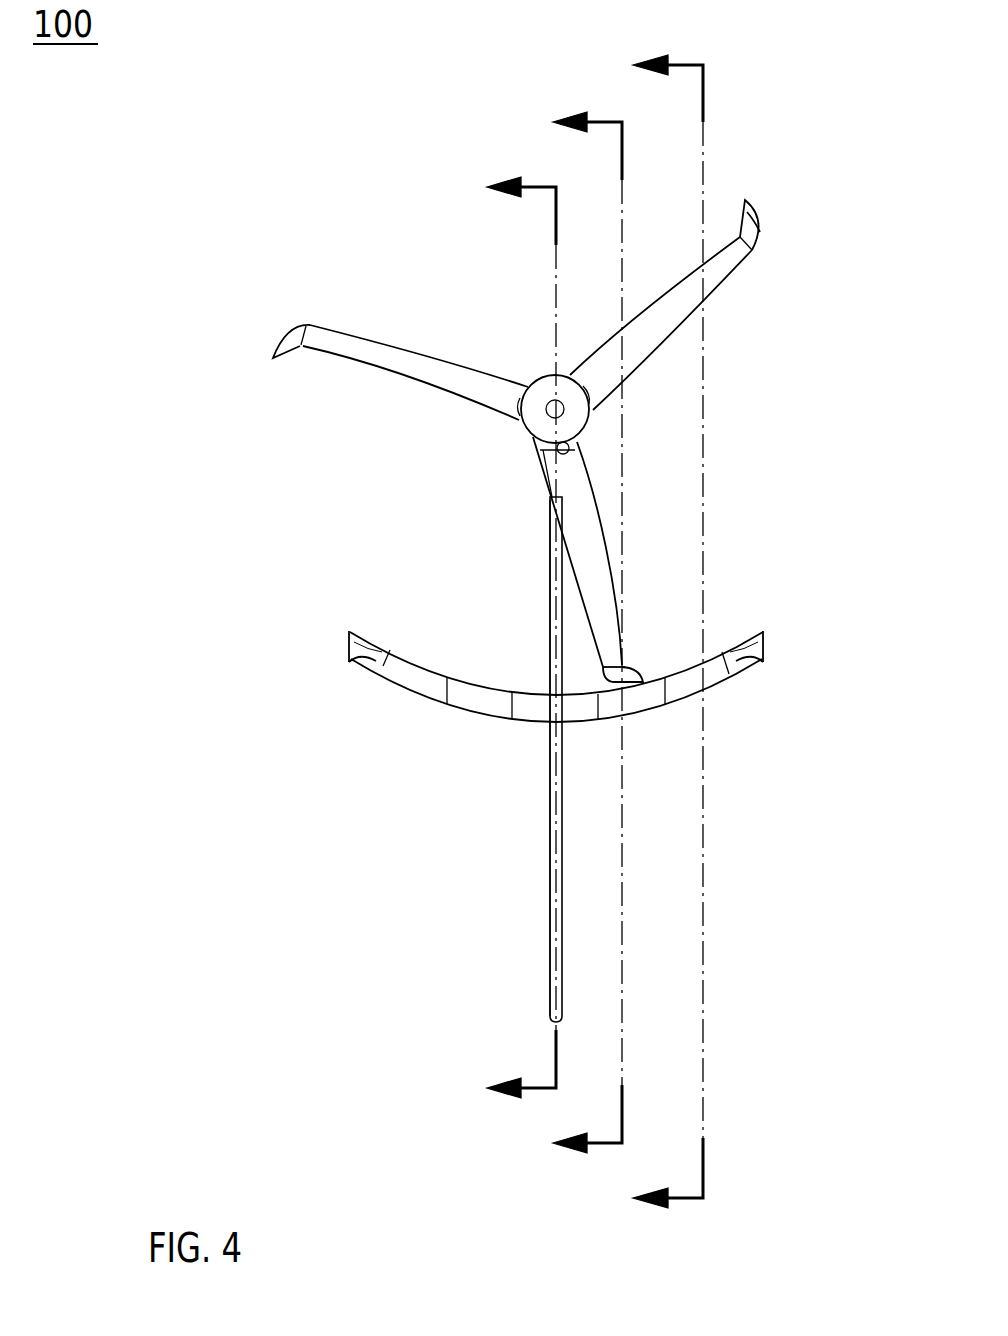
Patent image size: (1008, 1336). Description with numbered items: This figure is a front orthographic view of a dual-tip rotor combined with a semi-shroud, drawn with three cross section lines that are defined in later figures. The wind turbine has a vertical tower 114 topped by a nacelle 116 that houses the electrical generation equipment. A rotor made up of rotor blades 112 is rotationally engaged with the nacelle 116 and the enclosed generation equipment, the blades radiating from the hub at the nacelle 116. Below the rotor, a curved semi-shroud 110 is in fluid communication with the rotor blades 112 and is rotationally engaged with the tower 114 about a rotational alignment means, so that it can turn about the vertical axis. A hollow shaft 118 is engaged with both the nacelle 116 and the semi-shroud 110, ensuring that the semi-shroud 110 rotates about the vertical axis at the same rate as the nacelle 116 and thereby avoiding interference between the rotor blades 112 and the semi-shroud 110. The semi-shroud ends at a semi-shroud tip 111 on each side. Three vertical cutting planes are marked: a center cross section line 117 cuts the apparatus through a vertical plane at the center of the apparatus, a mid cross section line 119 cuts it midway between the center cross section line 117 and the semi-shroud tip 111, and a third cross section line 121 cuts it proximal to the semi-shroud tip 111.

The semi-shroud 110 is at (478, 708).
The semi-shroud tip 111 is at (365, 648).
The rotor blade 112 is at (393, 373).
The tower 114 is at (550, 845).
The nacelle 116 is at (537, 422).
The center cross section line 117 is at (556, 226).
The hollow shaft 118 is at (545, 592).
The mid cross section line 119 is at (622, 148).
The third cross section line 121 is at (703, 97).